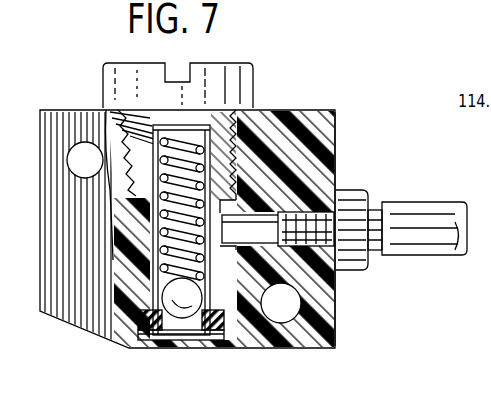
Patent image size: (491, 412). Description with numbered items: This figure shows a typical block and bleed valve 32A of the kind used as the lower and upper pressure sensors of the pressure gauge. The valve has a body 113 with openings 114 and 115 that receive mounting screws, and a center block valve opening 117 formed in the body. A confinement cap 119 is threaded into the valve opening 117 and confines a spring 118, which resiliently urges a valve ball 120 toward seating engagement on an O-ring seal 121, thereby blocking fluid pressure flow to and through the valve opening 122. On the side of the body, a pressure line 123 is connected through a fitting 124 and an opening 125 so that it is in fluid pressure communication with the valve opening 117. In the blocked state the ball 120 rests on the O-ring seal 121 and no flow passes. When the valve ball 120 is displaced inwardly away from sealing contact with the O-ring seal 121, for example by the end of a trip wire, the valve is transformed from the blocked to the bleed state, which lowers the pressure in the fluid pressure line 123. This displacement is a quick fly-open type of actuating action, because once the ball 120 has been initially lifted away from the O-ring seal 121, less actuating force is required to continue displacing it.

The block and bleed valve 32A is at (302, 110).
The body 113 is at (336, 143).
The opening 114 is at (82, 142).
The opening 115 is at (273, 310).
The center block valve opening 117 is at (152, 232).
The spring 118 is at (152, 265).
The confinement cap 119 is at (240, 100).
The valve ball 120 is at (192, 348).
The O-ring seal 121 is at (166, 348).
The valve opening 122 is at (180, 348).
The pressure line 123 is at (410, 202).
The fitting 124 is at (353, 190).
The opening 125 is at (263, 237).